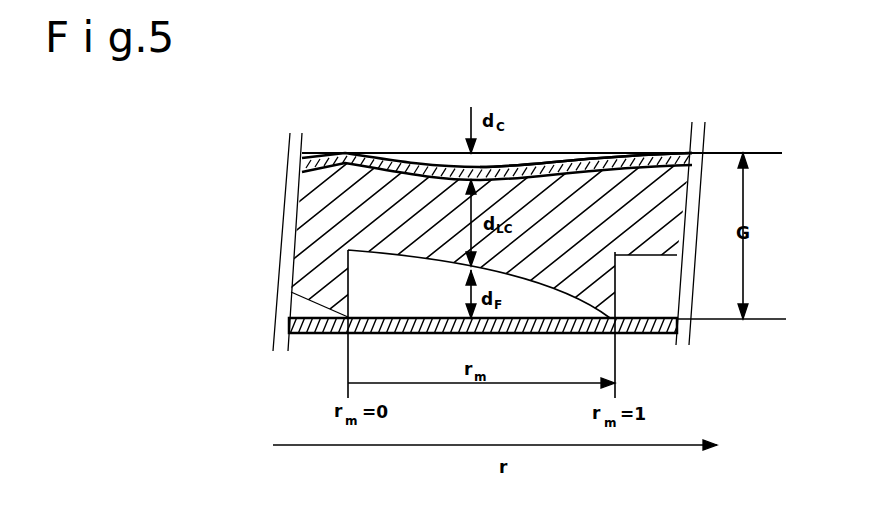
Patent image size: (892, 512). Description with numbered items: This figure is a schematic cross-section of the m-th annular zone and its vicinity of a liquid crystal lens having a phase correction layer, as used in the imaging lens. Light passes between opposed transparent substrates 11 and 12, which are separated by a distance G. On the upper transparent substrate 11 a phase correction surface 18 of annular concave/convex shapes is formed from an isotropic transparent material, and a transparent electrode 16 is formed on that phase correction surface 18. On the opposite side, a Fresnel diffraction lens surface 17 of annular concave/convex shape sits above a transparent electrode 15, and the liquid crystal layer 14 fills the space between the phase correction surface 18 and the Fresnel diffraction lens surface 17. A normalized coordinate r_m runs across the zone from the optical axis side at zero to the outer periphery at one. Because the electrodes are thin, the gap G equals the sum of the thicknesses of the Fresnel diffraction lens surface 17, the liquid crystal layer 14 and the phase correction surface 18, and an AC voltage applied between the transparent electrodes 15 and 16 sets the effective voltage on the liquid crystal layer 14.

The transparent substrate 11 is at (345, 135).
The transparent substrate 12 is at (337, 354).
The liquid crystal layer 14 is at (350, 191).
The transparent electrode 15 is at (287, 317).
The transparent electrode 16 is at (535, 165).
The Fresnel diffraction lens surface 17 is at (382, 273).
The phase correction surface 18 is at (443, 162).